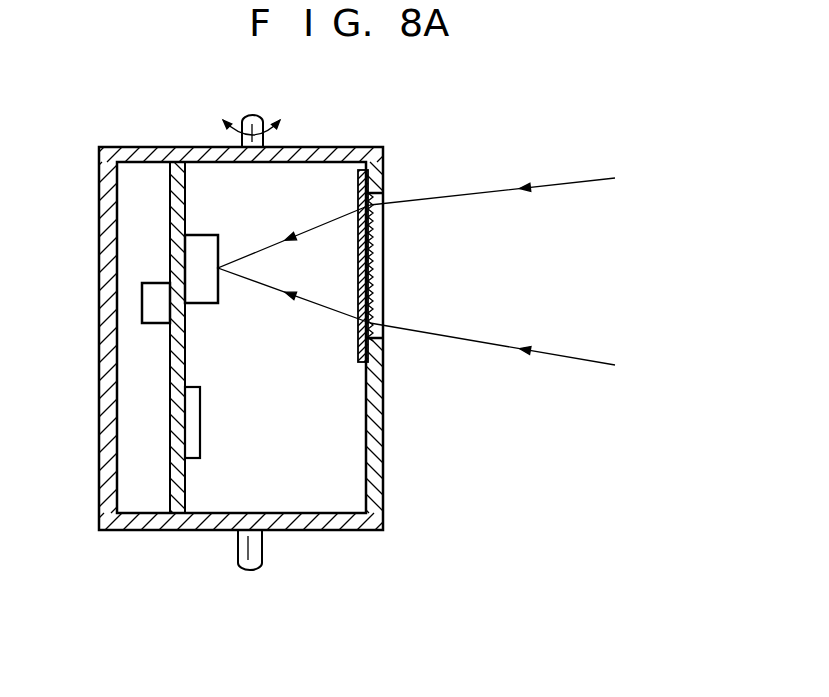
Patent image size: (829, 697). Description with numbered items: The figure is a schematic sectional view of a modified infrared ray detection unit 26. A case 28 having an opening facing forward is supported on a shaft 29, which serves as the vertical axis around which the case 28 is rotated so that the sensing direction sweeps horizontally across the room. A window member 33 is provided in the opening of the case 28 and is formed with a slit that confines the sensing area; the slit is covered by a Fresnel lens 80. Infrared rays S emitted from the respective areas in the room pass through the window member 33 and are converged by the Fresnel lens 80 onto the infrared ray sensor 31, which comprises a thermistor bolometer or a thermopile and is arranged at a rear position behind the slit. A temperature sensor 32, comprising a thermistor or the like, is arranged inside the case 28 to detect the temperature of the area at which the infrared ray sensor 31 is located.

The infrared ray detection unit 26 is at (358, 147).
The case 28 is at (100, 435).
The shaft 29 is at (262, 127).
The infrared ray sensor 31 is at (212, 235).
The temperature sensor 32 is at (155, 283).
The window member 33 is at (378, 470).
The Fresnel lens 80 is at (372, 238).
The infrared rays S is at (478, 343).